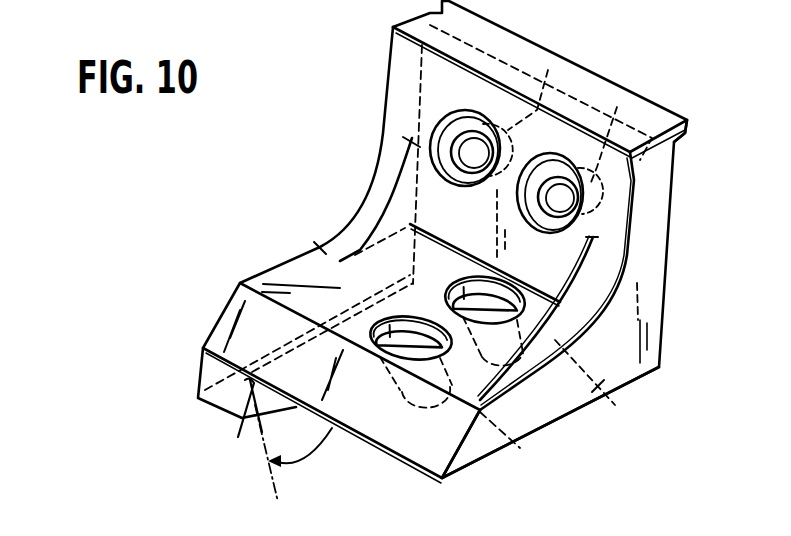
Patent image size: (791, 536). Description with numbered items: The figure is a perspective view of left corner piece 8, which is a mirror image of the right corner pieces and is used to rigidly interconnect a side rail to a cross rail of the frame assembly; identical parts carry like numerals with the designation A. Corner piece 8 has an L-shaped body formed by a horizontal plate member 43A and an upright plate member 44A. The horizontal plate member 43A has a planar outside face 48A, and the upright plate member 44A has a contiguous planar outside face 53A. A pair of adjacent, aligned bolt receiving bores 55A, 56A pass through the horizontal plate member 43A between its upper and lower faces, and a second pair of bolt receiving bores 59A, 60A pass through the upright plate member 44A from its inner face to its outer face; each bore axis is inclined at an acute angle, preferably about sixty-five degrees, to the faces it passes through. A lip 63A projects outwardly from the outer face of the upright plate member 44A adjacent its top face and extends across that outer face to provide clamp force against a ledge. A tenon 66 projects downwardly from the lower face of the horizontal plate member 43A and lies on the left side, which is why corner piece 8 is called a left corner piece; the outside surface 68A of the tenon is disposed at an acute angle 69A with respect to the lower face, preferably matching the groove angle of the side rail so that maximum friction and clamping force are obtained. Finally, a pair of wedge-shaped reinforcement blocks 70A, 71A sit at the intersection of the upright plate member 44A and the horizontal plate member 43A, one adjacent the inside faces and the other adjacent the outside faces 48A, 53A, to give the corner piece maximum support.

The left corner piece 8 is at (317, 88).
The horizontal plate member 43A is at (275, 266).
The upright plate member 44A is at (387, 89).
The outside face 48A is at (546, 410).
The outside face 53A is at (647, 231).
The bolt receiving bore 55A is at (505, 440).
The bolt receiving bore 56A is at (610, 386).
The bolt receiving bore 59A is at (549, 68).
The bolt receiving bore 60A is at (617, 107).
The lip 63A is at (688, 124).
The tenon 66 is at (222, 408).
The outside surface 68A is at (245, 428).
The acute angle 69A is at (300, 457).
The reinforcement block 70A is at (372, 182).
The reinforcement block 71A is at (587, 292).